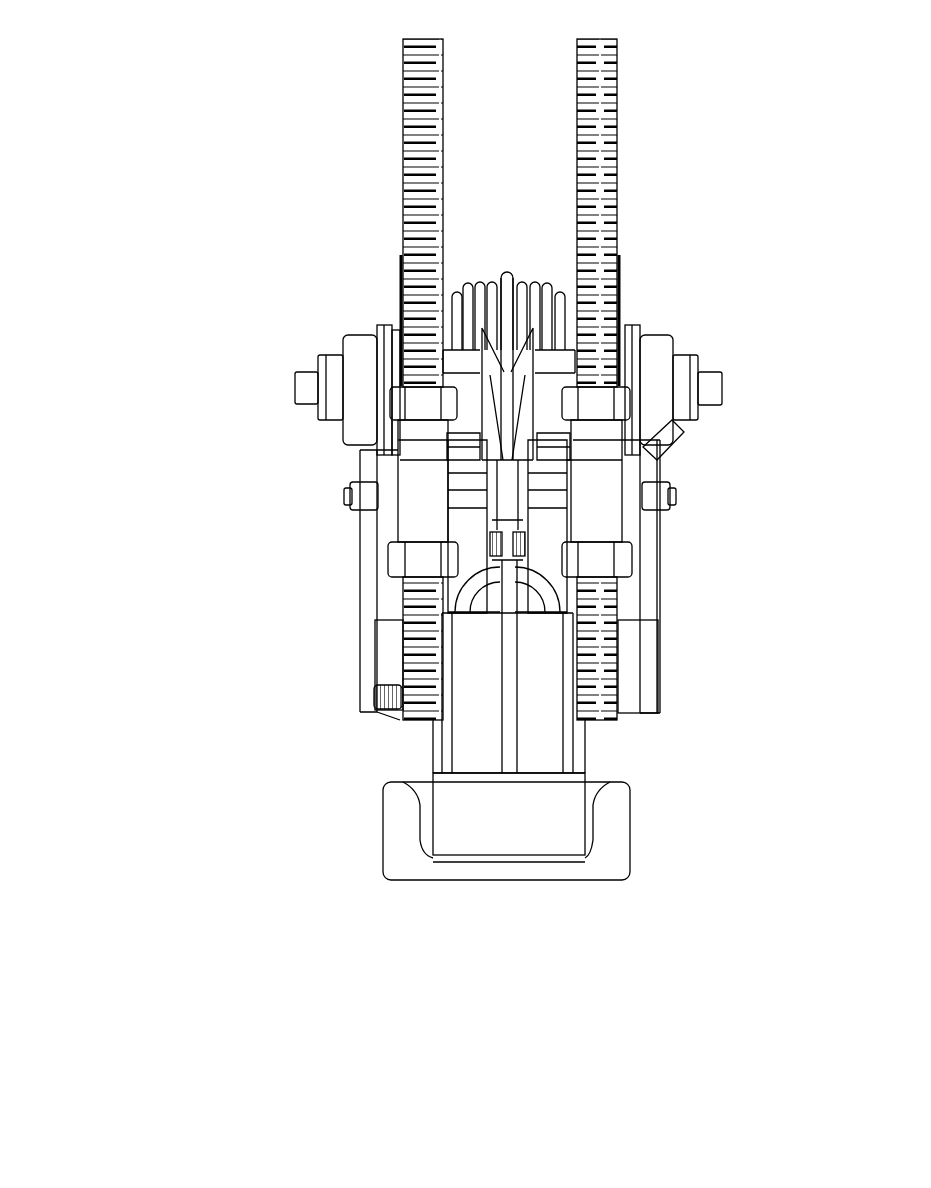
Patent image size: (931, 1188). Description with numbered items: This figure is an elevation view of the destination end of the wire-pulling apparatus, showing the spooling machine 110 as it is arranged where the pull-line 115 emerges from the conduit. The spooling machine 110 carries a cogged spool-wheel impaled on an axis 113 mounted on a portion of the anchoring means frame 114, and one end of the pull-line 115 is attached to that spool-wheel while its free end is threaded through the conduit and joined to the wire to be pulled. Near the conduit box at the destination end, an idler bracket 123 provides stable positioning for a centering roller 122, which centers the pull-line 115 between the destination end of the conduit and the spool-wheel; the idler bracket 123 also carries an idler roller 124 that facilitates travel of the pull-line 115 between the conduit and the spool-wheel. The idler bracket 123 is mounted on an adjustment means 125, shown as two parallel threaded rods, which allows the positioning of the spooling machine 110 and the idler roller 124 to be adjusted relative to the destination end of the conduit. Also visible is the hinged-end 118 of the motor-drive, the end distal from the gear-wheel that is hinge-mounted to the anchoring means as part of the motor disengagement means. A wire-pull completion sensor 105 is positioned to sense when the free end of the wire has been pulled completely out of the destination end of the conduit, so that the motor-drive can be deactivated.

The spooling machine 110 is at (165, 223).
The adjustment means 125 is at (606, 174).
The centering roller 122 is at (533, 391).
The wire-pull completion sensor 105 is at (525, 494).
The hinged-end 118 is at (545, 565).
The pull-line 115 is at (512, 735).
The idler roller 124 is at (475, 720).
The idler bracket 123 is at (520, 812).
The anchoring means frame 114 is at (388, 330).
The axis 113 is at (712, 388).